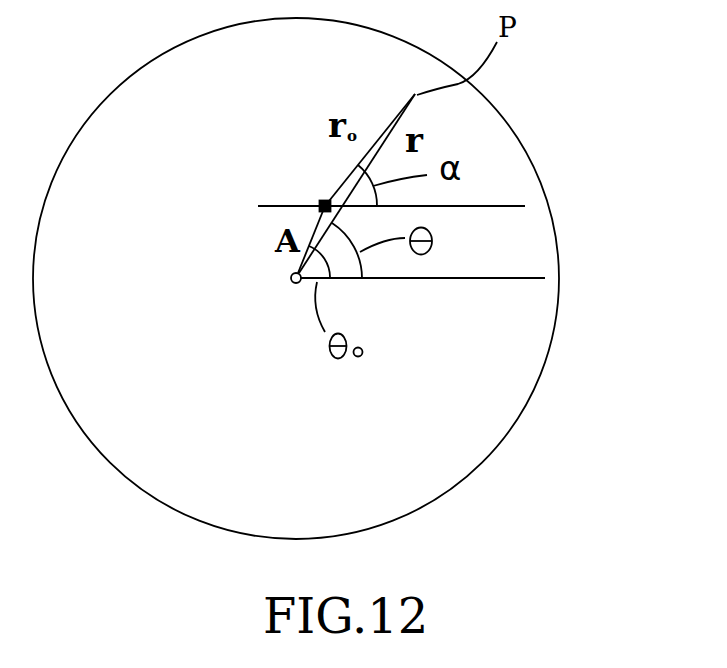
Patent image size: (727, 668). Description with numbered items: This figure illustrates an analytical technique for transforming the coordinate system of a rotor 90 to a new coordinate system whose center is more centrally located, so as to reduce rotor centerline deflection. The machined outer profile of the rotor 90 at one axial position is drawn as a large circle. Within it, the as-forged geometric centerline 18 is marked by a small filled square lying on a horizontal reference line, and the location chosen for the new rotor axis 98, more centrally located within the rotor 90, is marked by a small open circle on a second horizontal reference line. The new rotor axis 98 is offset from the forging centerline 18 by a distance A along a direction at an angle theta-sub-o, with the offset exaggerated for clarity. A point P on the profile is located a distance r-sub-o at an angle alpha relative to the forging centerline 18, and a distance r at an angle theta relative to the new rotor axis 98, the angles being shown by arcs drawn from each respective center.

The rotor 90 is at (533, 387).
The as-forged geometric centerline 18 is at (258, 207).
The new rotor axis 98 is at (291, 282).